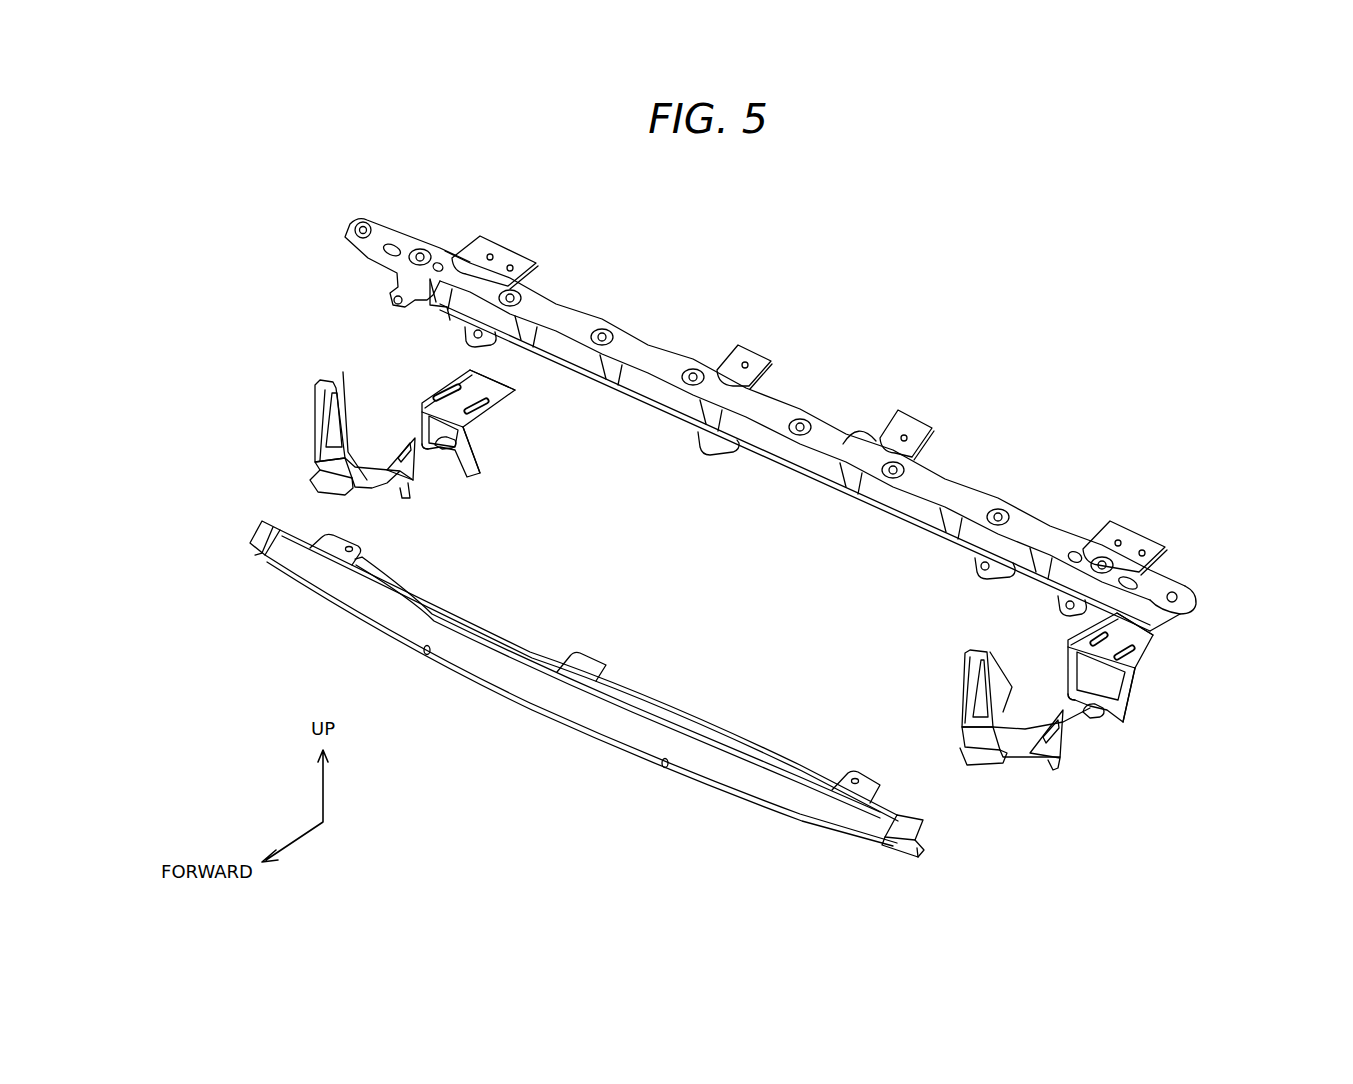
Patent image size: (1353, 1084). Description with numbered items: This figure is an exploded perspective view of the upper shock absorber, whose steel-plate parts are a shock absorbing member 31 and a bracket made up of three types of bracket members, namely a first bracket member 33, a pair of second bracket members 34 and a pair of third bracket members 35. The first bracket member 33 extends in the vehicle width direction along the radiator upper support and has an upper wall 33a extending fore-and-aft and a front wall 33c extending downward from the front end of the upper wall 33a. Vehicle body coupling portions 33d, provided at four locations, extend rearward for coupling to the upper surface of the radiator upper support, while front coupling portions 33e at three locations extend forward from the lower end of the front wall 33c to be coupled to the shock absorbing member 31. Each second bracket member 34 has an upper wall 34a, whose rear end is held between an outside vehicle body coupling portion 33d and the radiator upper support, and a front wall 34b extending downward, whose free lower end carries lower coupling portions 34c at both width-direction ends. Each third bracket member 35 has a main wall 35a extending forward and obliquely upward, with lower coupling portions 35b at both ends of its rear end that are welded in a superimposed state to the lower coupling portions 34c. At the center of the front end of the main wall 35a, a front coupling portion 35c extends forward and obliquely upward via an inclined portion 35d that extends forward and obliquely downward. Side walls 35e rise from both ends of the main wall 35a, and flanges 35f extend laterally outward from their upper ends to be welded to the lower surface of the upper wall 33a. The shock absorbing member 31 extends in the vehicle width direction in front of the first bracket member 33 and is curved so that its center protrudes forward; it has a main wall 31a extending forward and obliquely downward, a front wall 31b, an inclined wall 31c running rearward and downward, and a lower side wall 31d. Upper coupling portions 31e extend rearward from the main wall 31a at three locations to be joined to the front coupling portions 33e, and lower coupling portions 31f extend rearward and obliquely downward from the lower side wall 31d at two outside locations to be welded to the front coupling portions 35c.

The shock absorbing member 31 is at (727, 780).
The main wall 31a is at (480, 672).
The front wall 31b is at (560, 723).
The inclined wall 31c is at (893, 848).
The lower side wall 31d is at (902, 858).
The upper coupling portions 31e is at (340, 545).
The lower coupling portions 31f is at (922, 853).
The first bracket member 33 is at (658, 352).
The upper wall 33a is at (922, 477).
The front wall 33c is at (905, 498).
The vehicle body coupling portions 33d is at (495, 262).
The front coupling portions 33e is at (457, 325).
The second bracket member 34 is at (430, 392).
The upper wall 34a is at (502, 402).
The front wall 34b is at (467, 440).
The lower coupling portions 34c is at (445, 438).
The third bracket member 35 is at (367, 480).
The main wall 35a is at (370, 488).
The lower coupling portions 35b is at (408, 492).
The front coupling portion 35c is at (312, 484).
The inclined portion 35d is at (323, 467).
The side walls 35e is at (322, 435).
The flanges 35f is at (331, 383).